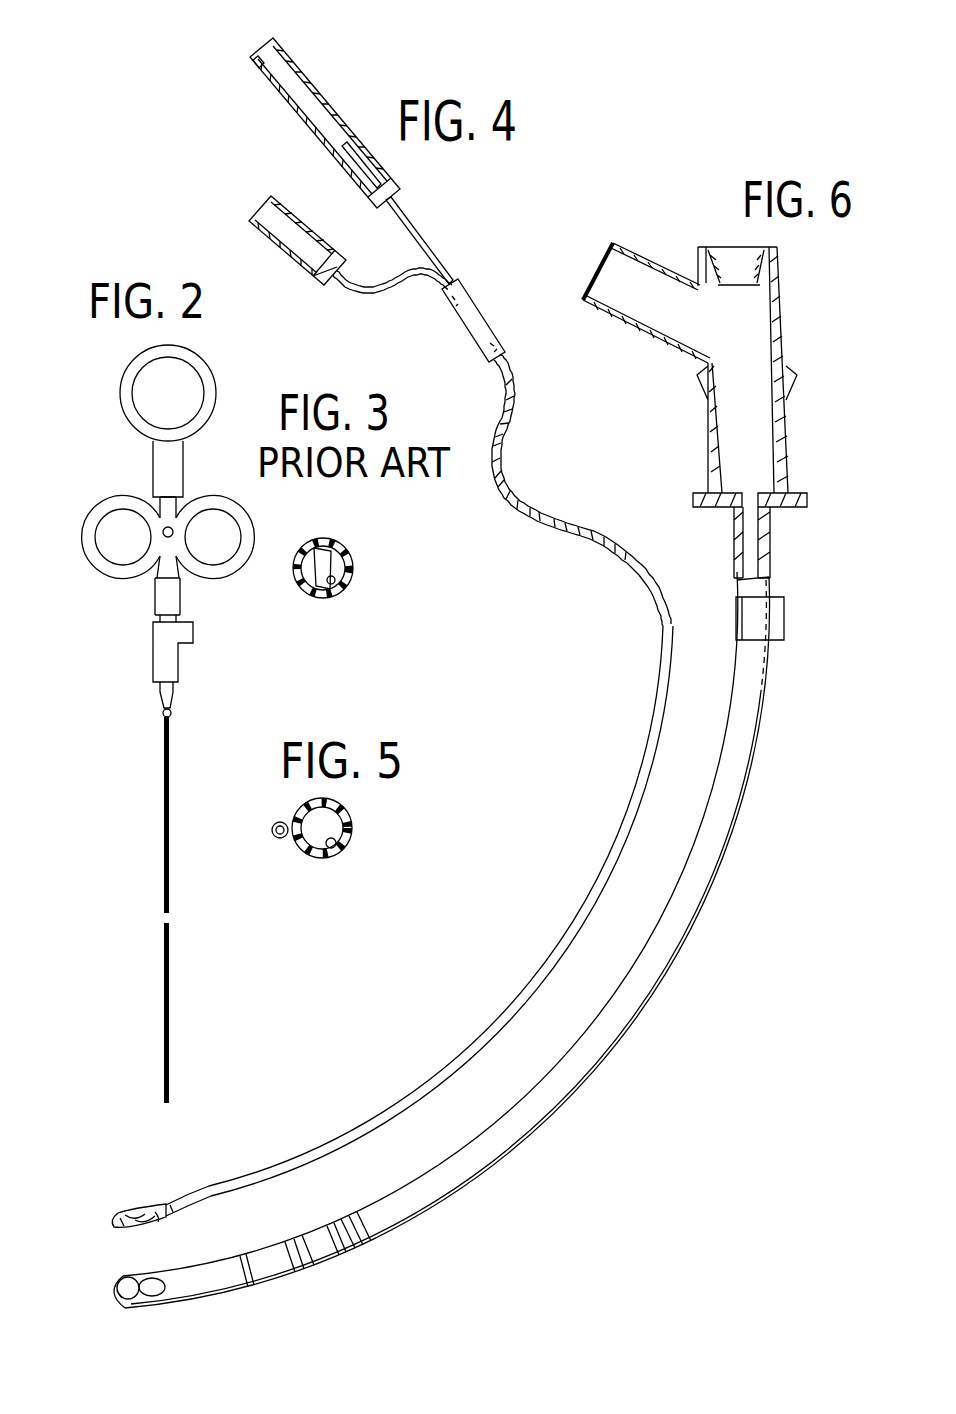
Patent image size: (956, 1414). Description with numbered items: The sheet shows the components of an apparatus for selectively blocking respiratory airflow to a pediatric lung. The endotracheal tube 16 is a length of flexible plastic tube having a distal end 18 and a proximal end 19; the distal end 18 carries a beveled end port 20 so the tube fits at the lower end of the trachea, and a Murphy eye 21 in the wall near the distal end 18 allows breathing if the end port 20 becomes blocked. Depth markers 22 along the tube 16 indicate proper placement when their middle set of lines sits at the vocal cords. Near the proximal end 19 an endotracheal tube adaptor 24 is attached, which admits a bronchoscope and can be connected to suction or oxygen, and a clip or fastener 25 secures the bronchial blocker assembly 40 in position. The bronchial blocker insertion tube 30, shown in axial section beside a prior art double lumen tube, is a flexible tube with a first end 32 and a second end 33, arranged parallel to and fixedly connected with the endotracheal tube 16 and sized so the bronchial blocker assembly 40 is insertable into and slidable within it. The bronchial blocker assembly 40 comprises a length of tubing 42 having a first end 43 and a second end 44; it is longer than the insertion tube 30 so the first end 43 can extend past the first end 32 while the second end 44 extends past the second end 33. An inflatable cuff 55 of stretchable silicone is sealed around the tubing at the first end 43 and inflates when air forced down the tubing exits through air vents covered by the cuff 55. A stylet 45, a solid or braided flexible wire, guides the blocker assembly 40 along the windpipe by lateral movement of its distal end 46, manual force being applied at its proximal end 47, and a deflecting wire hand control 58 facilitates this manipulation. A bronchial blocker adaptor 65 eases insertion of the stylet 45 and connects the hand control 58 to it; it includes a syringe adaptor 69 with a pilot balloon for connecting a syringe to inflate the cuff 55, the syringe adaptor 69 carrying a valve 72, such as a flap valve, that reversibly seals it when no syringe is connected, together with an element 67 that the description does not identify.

In FIG. 2, the deflecting wire hand control 58 is at (84, 520).
In FIG. 2, the proximal end of stylet 47 is at (170, 732).
In FIG. 2, the stylet 45 is at (162, 858).
In FIG. 2, the distal end of stylet 46 is at (163, 1084).
In FIG. 3, the endotracheal tube 16 is at (333, 593).
In FIG. 5, the endotracheal tube 16 is at (336, 848).
In FIG. 6, the endotracheal tube 16 is at (666, 937).
In FIG. 3, the bronchial blocker insertion tube 30 is at (302, 548).
In FIG. 5, the bronchial blocker insertion tube 30 is at (281, 840).
In FIG. 4, the valve 72 is at (256, 50).
In FIG. 4, the syringe adaptor 69 is at (328, 92).
In FIG. 4, the inflation port connector 67 is at (253, 209).
In FIG. 4, the bronchial blocker adaptor 65 is at (463, 276).
In FIG. 4, the second end of tubing 44 is at (517, 390).
In FIG. 6, the endotracheal tube adaptor 24 is at (784, 305).
In FIG. 6, the clip or fastener 25 is at (757, 606).
In FIG. 6, the second end of insertion tube 33 is at (760, 650).
In FIG. 6, the proximal end of endotracheal tube 19 is at (752, 667).
In FIG. 6, the bronchial blocker assembly 40 is at (650, 754).
In FIG. 6, the tubing 42 is at (598, 878).
In FIG. 6, the depth markers 22 is at (355, 1247).
In FIG. 6, the distal end of endotracheal tube 18 is at (213, 1283).
In FIG. 6, the beveled end port 20 is at (113, 1285).
In FIG. 6, the Murphy eye 21 is at (158, 1292).
In FIG. 6, the first end of insertion tube 32 is at (138, 1299).
In FIG. 6, the inflatable cuff 55 is at (132, 1215).
In FIG. 6, the first end of tubing 43 is at (175, 1203).